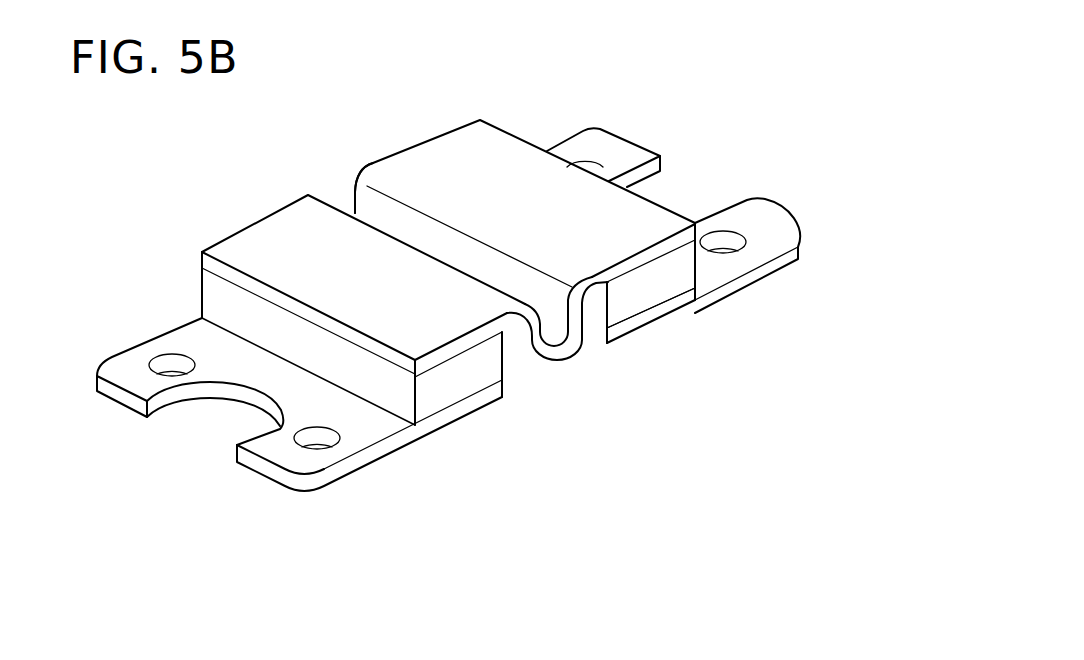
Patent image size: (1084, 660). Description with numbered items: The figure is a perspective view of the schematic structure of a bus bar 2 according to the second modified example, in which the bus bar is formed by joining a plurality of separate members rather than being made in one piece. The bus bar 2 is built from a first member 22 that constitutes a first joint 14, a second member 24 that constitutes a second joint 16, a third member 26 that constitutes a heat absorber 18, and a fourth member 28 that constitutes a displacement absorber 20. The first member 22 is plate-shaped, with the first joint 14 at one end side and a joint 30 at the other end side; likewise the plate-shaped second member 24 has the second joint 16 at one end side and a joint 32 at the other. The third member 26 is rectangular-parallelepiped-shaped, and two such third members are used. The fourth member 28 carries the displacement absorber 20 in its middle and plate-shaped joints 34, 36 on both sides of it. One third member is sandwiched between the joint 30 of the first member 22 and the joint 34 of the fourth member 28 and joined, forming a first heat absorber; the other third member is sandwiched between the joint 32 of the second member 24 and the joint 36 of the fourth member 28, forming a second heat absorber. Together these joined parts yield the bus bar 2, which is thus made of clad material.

The bus bar 2 is at (502, 341).
The first joint 14 is at (288, 368).
The second joint 16 is at (597, 127).
The heat absorber 18 is at (565, 324).
The displacement absorber 20 is at (558, 362).
The first member 22 is at (166, 317).
The second member 24 is at (739, 301).
The third member 26 is at (440, 418).
The fourth member 28 is at (365, 158).
The joint 30 is at (462, 343).
The joint 32 is at (640, 323).
The joint 34 is at (453, 385).
The joint 36 is at (538, 229).